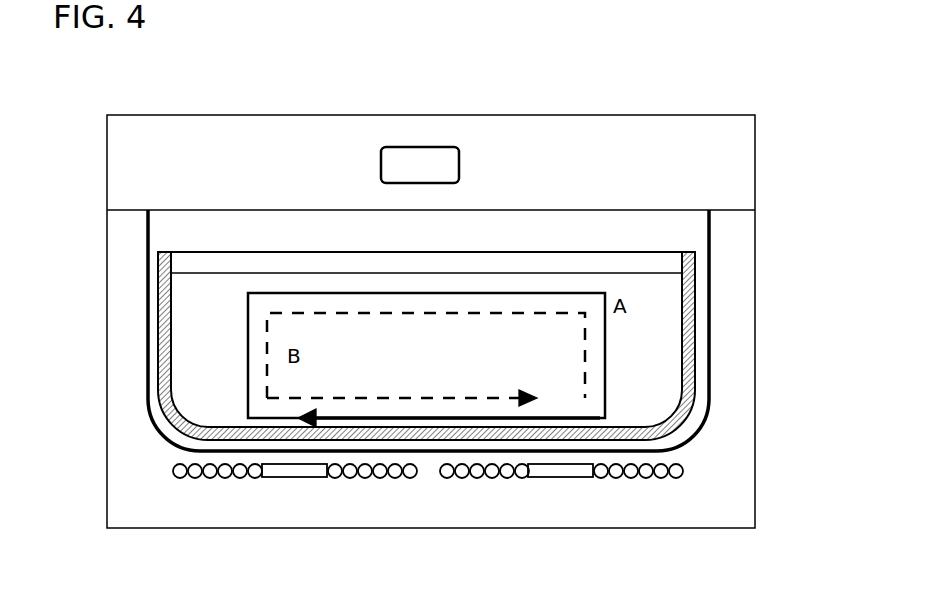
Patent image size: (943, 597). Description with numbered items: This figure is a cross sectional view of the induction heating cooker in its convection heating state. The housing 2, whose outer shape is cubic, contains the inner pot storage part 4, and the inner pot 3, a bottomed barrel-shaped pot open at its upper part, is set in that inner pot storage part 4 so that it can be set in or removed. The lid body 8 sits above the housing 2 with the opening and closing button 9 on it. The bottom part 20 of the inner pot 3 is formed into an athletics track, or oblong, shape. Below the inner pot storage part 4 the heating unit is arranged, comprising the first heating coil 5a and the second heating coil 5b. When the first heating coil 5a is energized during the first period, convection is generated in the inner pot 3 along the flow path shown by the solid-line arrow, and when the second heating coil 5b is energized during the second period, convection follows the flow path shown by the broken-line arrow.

The housing 2 is at (130, 488).
The inner pot 3 is at (693, 303).
The inner pot storage part 4 is at (712, 360).
The first heating coil 5a is at (300, 480).
The second heating coil 5b is at (563, 478).
The lid body 8 is at (728, 180).
The opening and closing button 9 is at (424, 162).
The bottom part 20 is at (657, 442).